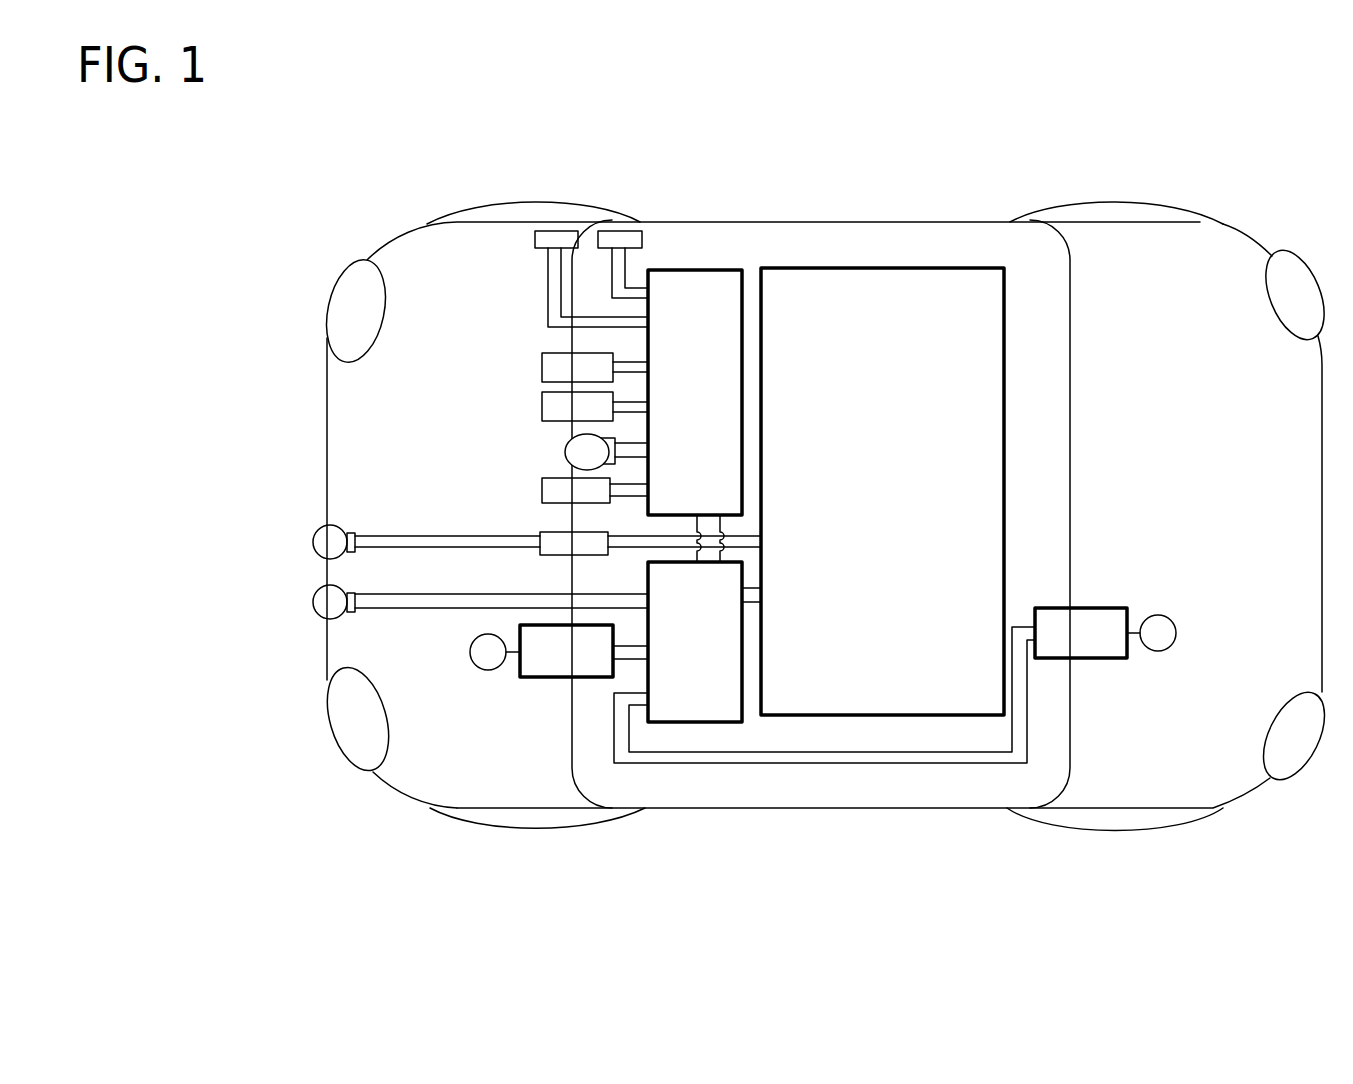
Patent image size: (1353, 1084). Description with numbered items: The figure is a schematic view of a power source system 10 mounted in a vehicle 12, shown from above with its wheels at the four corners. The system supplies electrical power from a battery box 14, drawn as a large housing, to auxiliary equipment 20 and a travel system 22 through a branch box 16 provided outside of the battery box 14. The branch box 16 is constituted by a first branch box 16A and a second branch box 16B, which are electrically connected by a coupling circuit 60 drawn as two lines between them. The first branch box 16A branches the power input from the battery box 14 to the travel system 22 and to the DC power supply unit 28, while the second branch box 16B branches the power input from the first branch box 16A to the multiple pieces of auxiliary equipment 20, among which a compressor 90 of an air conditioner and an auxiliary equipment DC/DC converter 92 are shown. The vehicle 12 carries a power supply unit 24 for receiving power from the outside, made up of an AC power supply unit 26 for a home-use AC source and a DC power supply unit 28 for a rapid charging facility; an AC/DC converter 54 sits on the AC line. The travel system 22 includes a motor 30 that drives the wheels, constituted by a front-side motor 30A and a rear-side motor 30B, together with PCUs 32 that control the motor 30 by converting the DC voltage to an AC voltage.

The power source system 10 is at (485, 258).
The vehicle 12 is at (298, 202).
The battery box 14 is at (876, 302).
The branch box 16 is at (775, 565).
The first branch box 16A is at (720, 632).
The second branch box 16B is at (720, 482).
The auxiliary equipment 20 is at (420, 319).
The travel system 22 is at (823, 785).
The power supply unit 24 is at (419, 571).
The AC power supply unit 26 is at (313, 541).
The DC power supply unit 28 is at (441, 601).
The motor 30 is at (823, 767).
The FR-side motor 30A is at (482, 669).
The RR-side motor 30B is at (1163, 650).
The PCU 32 is at (1080, 640).
The AC/DC charger 54 is at (542, 532).
The coupling circuit 60 is at (720, 553).
The compressor 90 is at (568, 443).
The auxiliary equipment DC/DC converter 92 is at (420, 463).